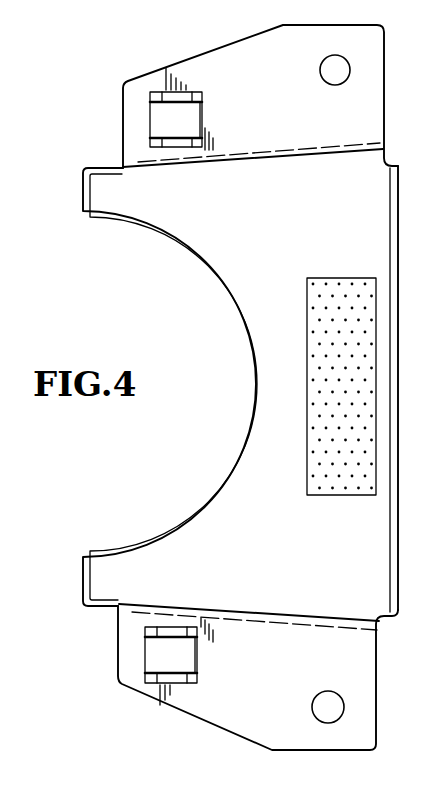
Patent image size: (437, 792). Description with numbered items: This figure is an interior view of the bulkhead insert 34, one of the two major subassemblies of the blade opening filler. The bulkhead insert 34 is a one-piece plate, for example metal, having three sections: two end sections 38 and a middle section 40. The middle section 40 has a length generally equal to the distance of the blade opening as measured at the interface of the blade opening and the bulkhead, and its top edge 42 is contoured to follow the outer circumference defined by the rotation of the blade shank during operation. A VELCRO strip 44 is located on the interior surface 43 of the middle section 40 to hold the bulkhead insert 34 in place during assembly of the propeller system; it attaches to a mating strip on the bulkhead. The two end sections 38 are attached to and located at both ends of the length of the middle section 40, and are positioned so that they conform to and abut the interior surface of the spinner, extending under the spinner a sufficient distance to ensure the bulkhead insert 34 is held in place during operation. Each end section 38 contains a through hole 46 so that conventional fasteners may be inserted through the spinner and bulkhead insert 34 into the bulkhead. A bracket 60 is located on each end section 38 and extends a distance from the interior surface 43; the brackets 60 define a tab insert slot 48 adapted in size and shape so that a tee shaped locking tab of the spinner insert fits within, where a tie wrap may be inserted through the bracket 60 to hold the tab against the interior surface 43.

The bulkhead insert 34 is at (132, 313).
The end section 38 is at (195, 65).
The middle section 40 is at (397, 405).
The top edge 42 is at (235, 320).
The interior surface 43 is at (248, 264).
The VELCRO strip 44 is at (325, 290).
The through hole 46 is at (323, 70).
The tab insert slot 48 is at (198, 115).
The bracket 60 is at (173, 140).